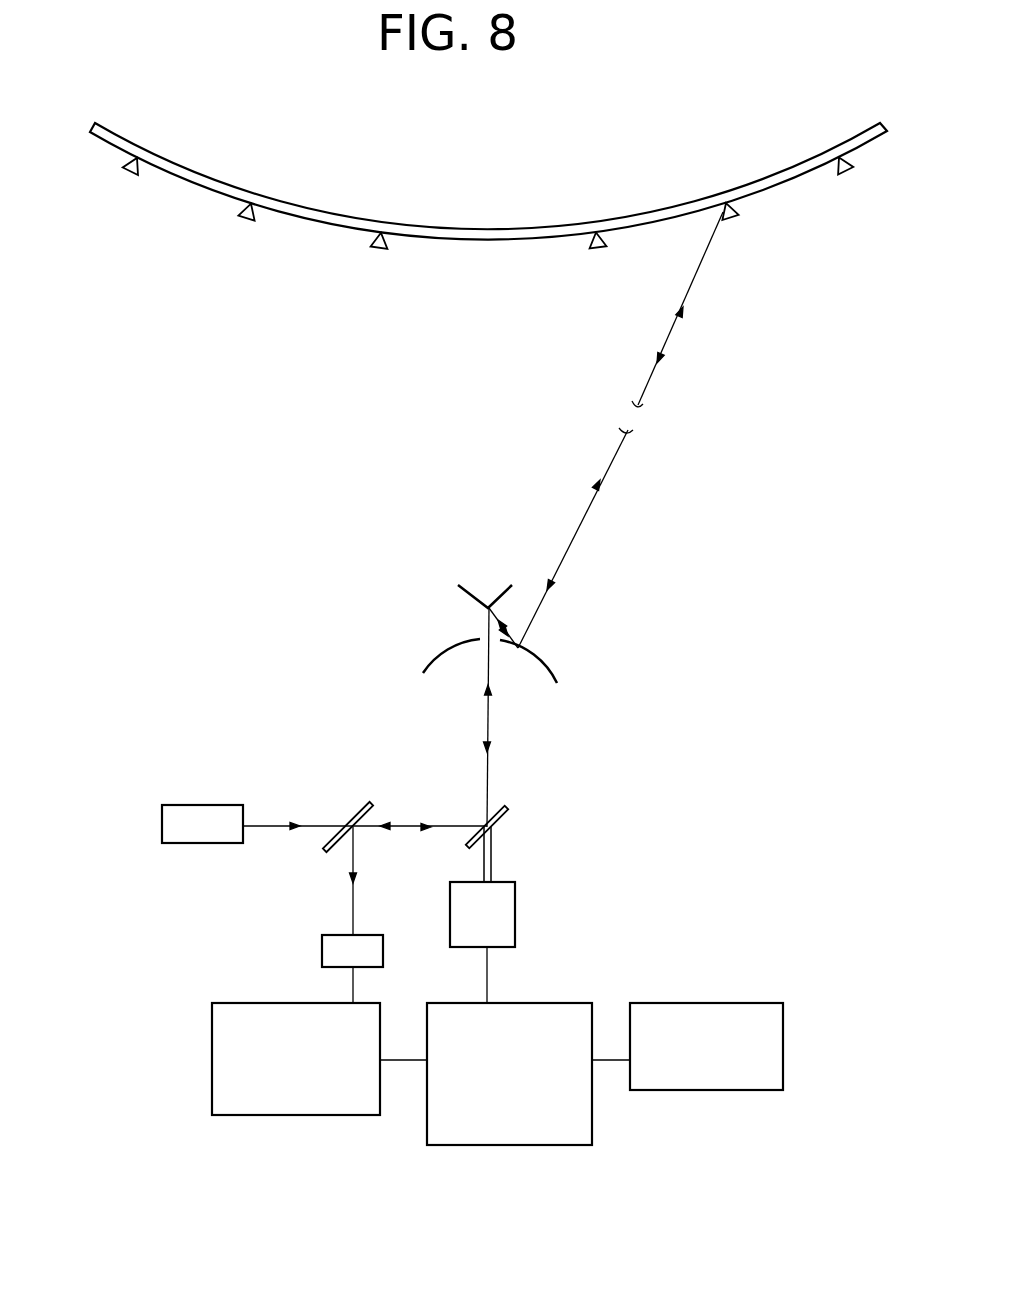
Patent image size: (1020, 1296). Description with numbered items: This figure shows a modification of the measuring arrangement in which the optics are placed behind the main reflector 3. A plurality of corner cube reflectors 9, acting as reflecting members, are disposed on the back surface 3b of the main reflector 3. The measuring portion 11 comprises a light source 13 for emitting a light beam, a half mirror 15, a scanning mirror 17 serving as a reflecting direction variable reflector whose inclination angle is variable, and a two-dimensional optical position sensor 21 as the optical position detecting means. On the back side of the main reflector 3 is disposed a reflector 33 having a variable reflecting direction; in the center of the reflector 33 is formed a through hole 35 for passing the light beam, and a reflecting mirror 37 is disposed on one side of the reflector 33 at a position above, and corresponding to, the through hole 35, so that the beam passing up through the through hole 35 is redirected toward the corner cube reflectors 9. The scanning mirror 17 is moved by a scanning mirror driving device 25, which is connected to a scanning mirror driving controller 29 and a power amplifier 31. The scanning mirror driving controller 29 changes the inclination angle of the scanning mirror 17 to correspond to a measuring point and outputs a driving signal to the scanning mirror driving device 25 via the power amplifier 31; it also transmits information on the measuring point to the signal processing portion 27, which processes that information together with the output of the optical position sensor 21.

The main reflector 3 is at (764, 171).
The back surface 3b is at (793, 178).
The corner cube reflectors 9 is at (597, 253).
The measuring portion 11 is at (192, 852).
The light source 13 is at (207, 805).
The half mirror 15 is at (352, 818).
The scanning mirror 17 is at (498, 803).
The two-dimensional optical position sensor 21 is at (320, 950).
The scanning mirror driving device 25 is at (515, 900).
The signal processing portion 27 is at (212, 1050).
The scanning mirror driving controller 29 is at (527, 1146).
The power amplifier 31 is at (740, 1092).
The reflector having a variable reflecting direction 33 is at (545, 667).
The through hole 35 is at (480, 638).
The reflecting mirror 37 is at (462, 596).